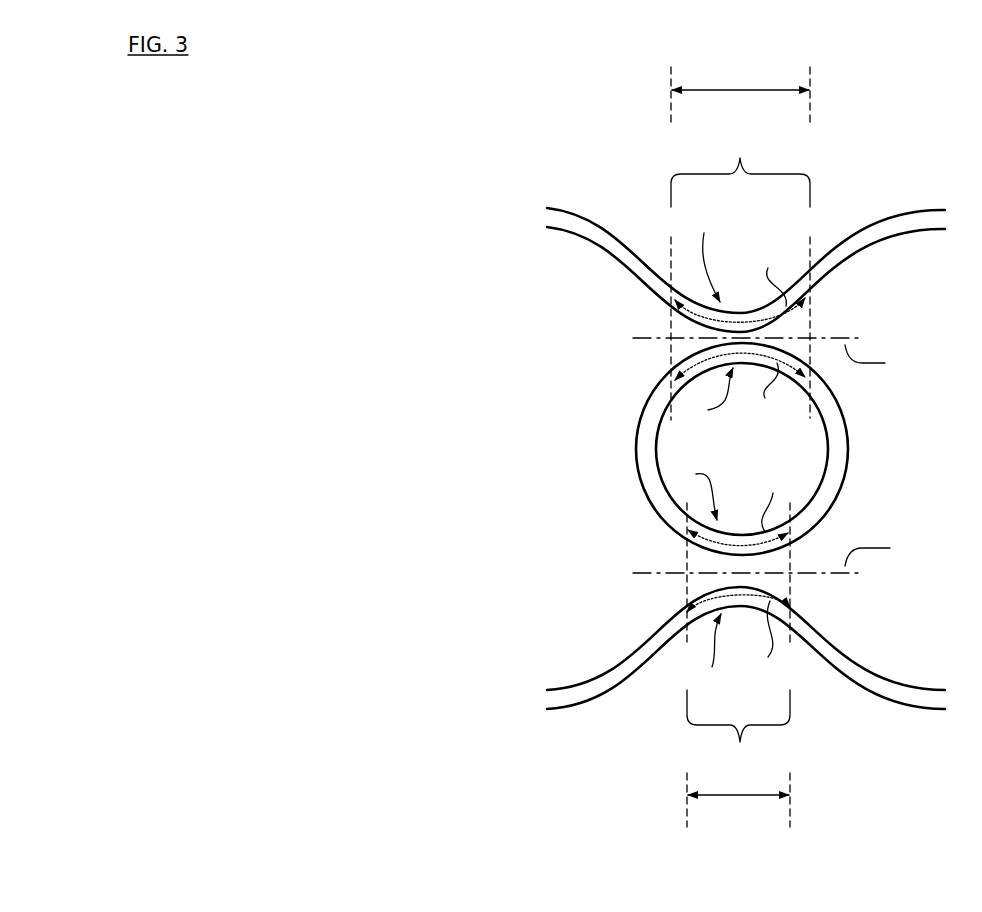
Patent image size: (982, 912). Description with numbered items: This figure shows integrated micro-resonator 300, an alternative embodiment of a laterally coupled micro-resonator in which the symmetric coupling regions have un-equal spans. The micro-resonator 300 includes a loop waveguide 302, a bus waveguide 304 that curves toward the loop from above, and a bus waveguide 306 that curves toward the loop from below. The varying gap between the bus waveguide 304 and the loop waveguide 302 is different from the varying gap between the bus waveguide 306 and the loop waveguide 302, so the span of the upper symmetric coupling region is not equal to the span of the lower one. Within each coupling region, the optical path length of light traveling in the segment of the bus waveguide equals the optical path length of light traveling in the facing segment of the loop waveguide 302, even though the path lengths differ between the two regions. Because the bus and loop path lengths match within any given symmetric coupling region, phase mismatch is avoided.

The integrated micro-resonator 300 is at (476, 142).
The loop waveguide 302 is at (646, 453).
The bus waveguide 304 is at (592, 232).
The bus waveguide 306 is at (598, 693).